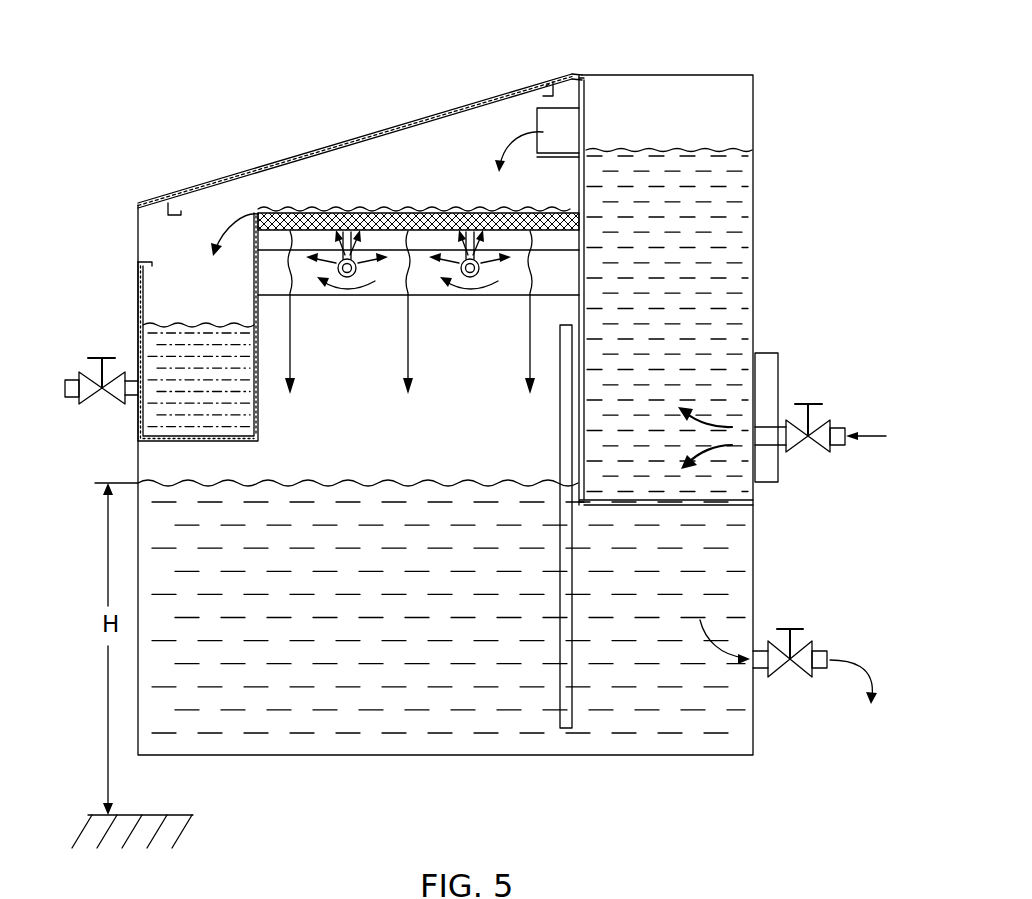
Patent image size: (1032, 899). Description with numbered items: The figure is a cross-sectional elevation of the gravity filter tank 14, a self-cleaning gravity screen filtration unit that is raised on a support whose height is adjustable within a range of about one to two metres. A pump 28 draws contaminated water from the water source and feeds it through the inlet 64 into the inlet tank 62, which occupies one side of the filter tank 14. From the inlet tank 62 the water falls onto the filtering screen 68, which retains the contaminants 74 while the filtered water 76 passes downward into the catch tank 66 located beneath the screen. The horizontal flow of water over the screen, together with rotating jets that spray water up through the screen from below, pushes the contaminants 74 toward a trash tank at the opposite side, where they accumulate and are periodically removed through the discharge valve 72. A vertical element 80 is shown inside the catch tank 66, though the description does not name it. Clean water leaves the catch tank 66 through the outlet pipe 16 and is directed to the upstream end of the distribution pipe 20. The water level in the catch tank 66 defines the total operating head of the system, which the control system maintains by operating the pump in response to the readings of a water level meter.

The gravity filter tank 14 is at (433, 73).
The outlet pipe 16 is at (815, 650).
The distribution pipe 20 is at (859, 695).
The pump 28 is at (836, 428).
The inlet tank 62 is at (687, 327).
The inlet 64 is at (780, 440).
The catch tank 66 is at (377, 667).
The filtering screen 68 is at (272, 207).
The discharge valve 72 is at (102, 372).
The contaminants 74 is at (434, 208).
The filtered water 76 is at (408, 340).
The baffle plate 80 is at (570, 441).